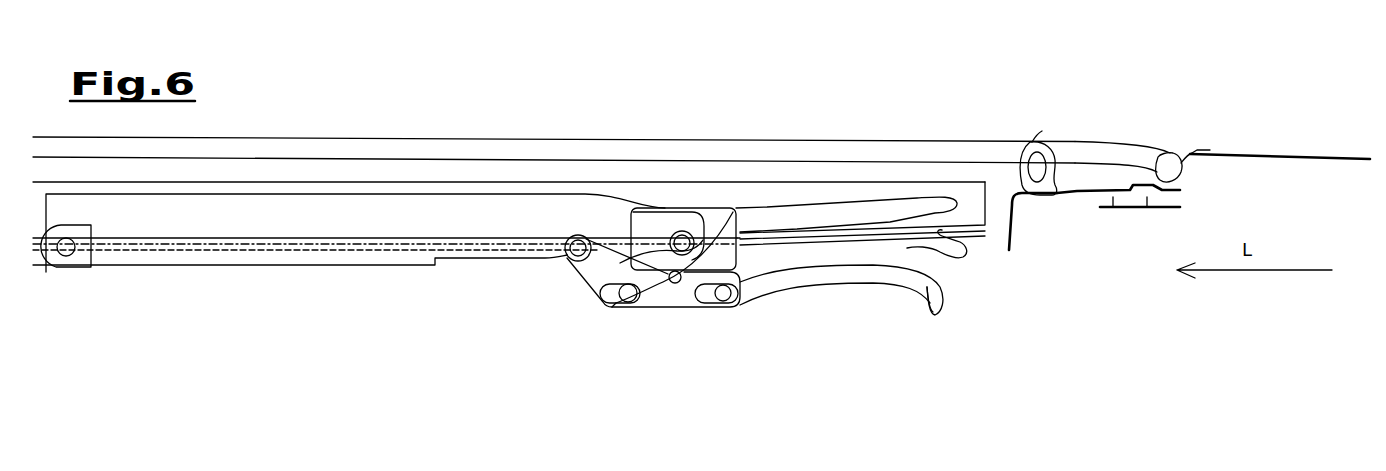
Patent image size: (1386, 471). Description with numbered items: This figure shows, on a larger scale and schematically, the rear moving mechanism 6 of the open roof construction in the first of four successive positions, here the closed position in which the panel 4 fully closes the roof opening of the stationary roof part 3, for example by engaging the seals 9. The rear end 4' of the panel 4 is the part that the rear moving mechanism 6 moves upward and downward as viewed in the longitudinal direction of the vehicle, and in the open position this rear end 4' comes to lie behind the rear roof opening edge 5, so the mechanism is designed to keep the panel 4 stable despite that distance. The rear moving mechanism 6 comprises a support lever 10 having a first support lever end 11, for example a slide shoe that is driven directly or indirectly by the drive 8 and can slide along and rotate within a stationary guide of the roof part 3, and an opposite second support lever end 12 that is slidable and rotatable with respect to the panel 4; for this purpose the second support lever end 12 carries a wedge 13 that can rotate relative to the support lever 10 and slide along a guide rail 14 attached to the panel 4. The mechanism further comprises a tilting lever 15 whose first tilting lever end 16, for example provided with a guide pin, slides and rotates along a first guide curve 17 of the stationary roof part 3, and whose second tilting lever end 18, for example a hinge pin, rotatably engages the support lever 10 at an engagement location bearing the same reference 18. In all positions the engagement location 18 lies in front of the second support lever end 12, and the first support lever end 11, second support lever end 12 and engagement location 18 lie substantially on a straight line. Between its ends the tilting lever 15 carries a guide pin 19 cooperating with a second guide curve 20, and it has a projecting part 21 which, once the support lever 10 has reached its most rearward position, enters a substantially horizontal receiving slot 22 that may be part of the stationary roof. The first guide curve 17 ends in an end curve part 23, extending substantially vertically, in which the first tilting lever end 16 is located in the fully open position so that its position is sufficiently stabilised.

The stationary roof part 3 is at (1267, 157).
The panel 4 is at (554, 85).
The rear end 4' is at (554, 93).
The rear roof opening edge 5 is at (1017, 227).
The rear moving mechanism 6 is at (766, 309).
The drive 8 is at (40, 253).
The seals 9 is at (1017, 167).
The support lever 10 is at (415, 210).
The first support lever end 11 is at (87, 267).
The second support lever end 12 is at (673, 250).
The wedge 13 is at (720, 210).
The guide rail 14 is at (820, 193).
The tilting lever 15 is at (593, 273).
The first tilting lever end 16 is at (727, 297).
The first guide curve 17 is at (877, 277).
The second tilting lever end 18 is at (573, 253).
The guide pin 19 is at (627, 293).
The second guide curve 20 is at (907, 207).
The projecting part 21 is at (677, 277).
The receiving slot 22 is at (952, 253).
The end curve part 23 is at (940, 298).